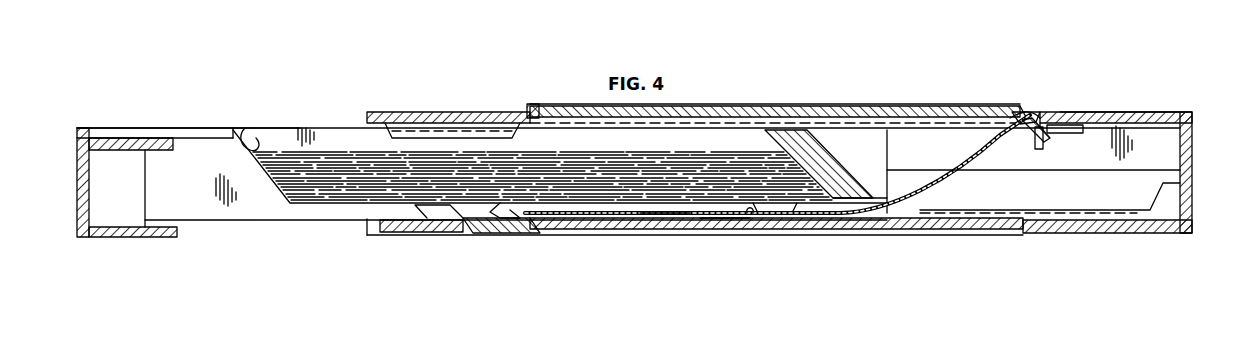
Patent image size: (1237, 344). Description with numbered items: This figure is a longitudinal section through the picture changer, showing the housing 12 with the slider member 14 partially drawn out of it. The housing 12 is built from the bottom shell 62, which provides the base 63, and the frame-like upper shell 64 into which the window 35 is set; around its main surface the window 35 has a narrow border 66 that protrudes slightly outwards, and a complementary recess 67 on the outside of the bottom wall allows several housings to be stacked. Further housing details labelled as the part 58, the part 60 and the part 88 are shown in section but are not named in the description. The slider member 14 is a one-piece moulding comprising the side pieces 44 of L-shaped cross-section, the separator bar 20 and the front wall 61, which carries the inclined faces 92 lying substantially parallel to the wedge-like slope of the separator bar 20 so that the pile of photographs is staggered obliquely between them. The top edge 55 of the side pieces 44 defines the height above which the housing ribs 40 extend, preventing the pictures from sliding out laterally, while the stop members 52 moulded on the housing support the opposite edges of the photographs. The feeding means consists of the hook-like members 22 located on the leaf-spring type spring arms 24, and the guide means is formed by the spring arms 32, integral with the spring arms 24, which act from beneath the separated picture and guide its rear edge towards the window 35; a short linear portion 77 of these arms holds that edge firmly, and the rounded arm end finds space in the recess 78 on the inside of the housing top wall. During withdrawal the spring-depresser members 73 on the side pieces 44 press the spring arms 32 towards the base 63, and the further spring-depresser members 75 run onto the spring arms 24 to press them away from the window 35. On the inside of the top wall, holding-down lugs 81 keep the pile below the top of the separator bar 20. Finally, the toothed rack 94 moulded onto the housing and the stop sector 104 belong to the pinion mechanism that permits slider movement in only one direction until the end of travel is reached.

The housing 12 is at (1108, 112).
The slider member 14 is at (246, 228).
The separator bar 20 is at (838, 160).
The hook-like members 22 is at (500, 218).
The spring arms 24 is at (607, 230).
The spring arms 32 is at (948, 185).
The window 35 is at (806, 107).
The ribs 40 is at (1072, 134).
The side pieces 44 is at (333, 134).
The stop members 52 is at (1037, 150).
The top edge 55 is at (278, 128).
The end cap 58 is at (1064, 110).
The lower shell segment 60 is at (416, 230).
The front wall 61 is at (76, 206).
The bottom shell 62 is at (1130, 234).
The base 63 is at (878, 236).
The upper shell 64 is at (1154, 110).
The border 66 is at (533, 110).
The recess 67 is at (722, 230).
The spring-depresser members 73 is at (783, 212).
The spring-depresser members 75 is at (663, 214).
The linear portion 77 is at (1024, 128).
The recess 78 is at (1036, 114).
The holding-down lugs 81 is at (448, 120).
The right end wall 88 is at (1192, 146).
The inclined faces 92 is at (258, 142).
The toothed rack 94 is at (1058, 216).
The stop sector 104 is at (1146, 184).